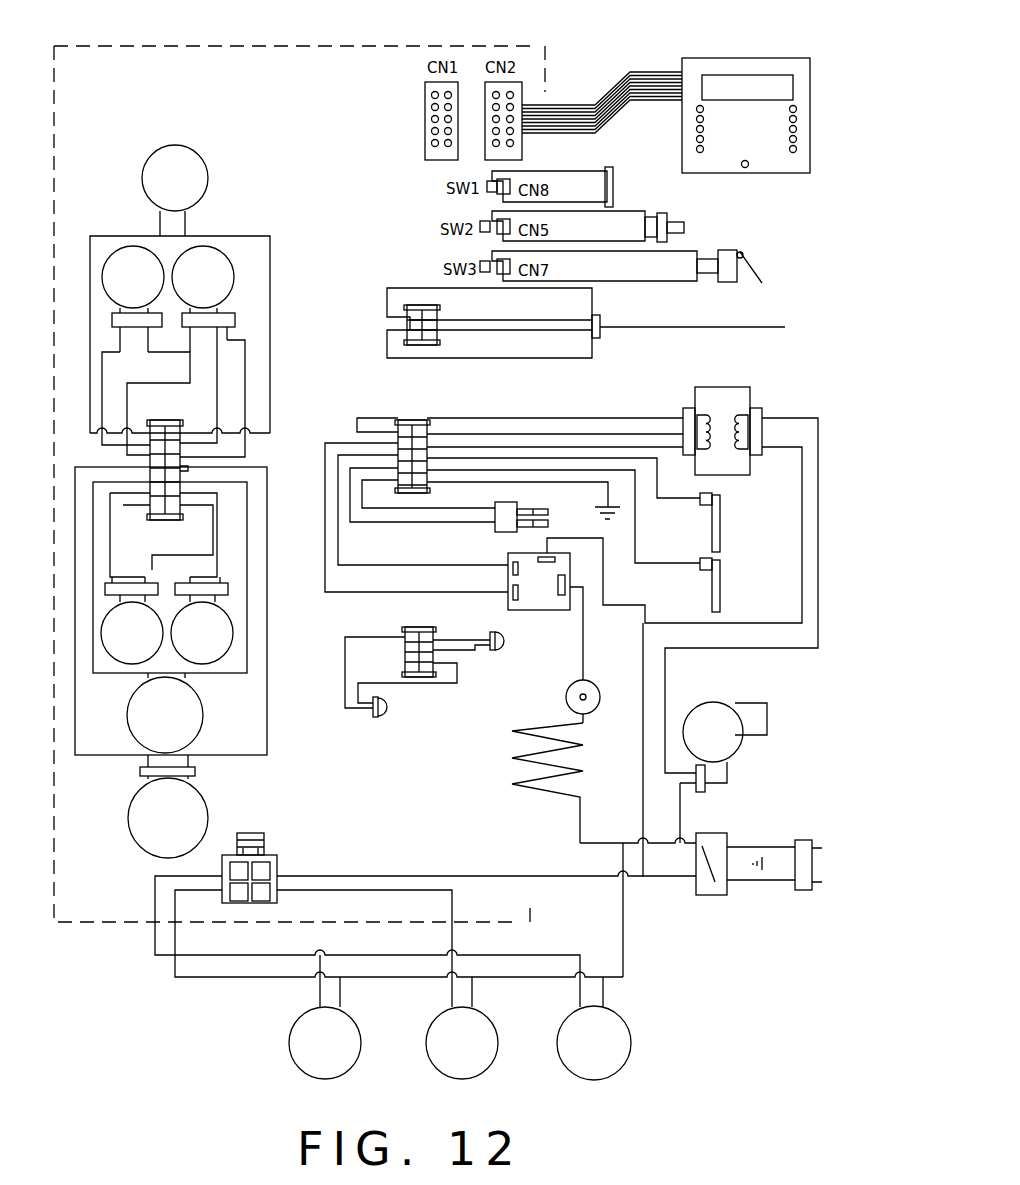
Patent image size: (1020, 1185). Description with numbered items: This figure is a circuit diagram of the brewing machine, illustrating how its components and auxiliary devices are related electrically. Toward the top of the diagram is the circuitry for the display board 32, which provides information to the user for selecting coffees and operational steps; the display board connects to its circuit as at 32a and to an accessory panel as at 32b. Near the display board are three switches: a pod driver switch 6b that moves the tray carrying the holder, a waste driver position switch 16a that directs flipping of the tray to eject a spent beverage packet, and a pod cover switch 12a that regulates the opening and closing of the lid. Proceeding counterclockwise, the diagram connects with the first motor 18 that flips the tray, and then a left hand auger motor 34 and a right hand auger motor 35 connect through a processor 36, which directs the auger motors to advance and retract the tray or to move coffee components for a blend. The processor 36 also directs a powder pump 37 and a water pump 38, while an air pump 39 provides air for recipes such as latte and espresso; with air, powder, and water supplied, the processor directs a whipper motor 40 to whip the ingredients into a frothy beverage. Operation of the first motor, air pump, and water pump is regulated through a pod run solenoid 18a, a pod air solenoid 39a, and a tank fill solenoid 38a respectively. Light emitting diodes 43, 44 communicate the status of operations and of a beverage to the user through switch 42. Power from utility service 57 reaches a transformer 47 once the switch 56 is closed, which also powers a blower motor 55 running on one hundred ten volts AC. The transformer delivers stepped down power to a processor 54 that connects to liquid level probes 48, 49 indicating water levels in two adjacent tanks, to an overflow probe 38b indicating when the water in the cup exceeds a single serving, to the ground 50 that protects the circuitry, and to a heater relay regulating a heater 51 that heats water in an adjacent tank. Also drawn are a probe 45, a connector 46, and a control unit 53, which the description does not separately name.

The first motor 18 is at (153, 158).
The left hand auger motor 34 is at (128, 243).
The right hand auger motor 35 is at (232, 257).
The processor 36 is at (150, 455).
The powder pump 37 is at (102, 637).
The water pump 38 is at (233, 638).
The air pump 39 is at (128, 718).
The whipper motor 40 is at (128, 817).
The switch 42 is at (405, 655).
The light emitting diode 43 is at (388, 718).
The light emitting diode 44 is at (497, 653).
The temperature probe 45 is at (780, 327).
The connector 46 is at (410, 310).
The transformer 47 is at (725, 400).
The liquid level probe 48 is at (720, 525).
The liquid level probe 49 is at (720, 585).
The ground 50 is at (620, 513).
The heater 51 is at (545, 797).
The control unit 53 is at (540, 600).
The processor 54 is at (398, 425).
The blower motor 55 is at (730, 745).
The switch 56 is at (707, 890).
The utility service 57 is at (810, 868).
The pod driver switch 6b is at (613, 187).
The pod cover switch 12a is at (737, 268).
The waste driver position switch 16a is at (684, 227).
The display board 32 is at (727, 85).
The display board circuit connection 32a is at (522, 90).
The accessory panel 32b is at (425, 117).
The pod run solenoid 18a is at (478, 1075).
The tank fill solenoid 38a is at (320, 1078).
The overflow probe 38b is at (508, 515).
The pod air solenoid 39a is at (630, 1055).